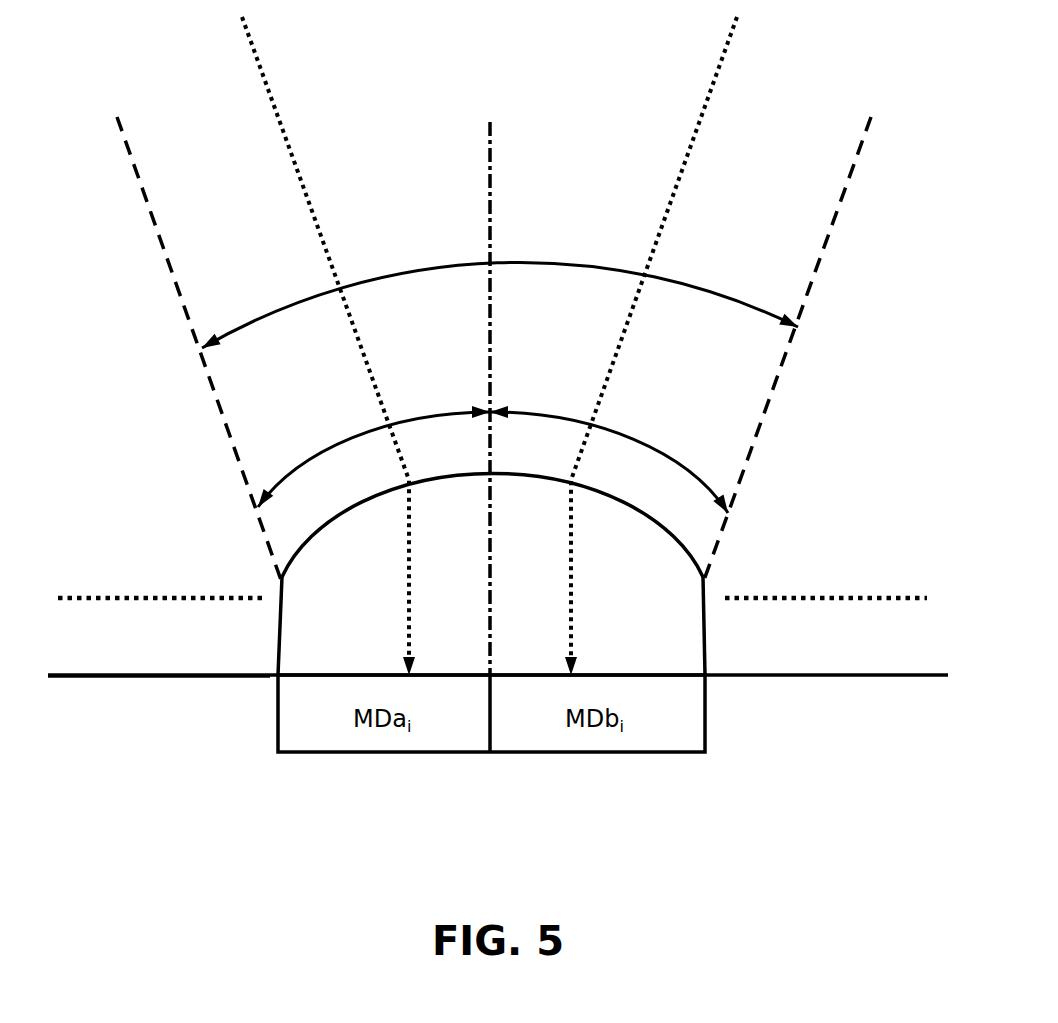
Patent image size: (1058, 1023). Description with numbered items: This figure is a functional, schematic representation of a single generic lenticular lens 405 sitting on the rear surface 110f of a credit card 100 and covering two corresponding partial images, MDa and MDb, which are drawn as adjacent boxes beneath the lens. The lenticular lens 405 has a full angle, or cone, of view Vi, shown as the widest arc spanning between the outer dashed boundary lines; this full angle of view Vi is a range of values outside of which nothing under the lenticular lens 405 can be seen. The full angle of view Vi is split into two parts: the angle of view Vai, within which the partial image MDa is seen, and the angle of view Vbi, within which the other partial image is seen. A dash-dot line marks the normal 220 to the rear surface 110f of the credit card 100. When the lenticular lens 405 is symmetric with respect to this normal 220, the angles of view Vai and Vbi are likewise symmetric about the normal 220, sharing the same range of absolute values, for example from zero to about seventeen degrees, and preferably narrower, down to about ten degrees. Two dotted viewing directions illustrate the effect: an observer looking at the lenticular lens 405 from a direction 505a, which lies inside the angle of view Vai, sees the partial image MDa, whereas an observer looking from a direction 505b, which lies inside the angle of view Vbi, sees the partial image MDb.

The credit card 100 is at (136, 738).
The rear surface 110f is at (498, 710).
The normal 220 is at (443, 398).
The lenticular lens 405 is at (534, 574).
The viewing direction inside angle of view Va_i 505a is at (328, 346).
The viewing direction inside angle of view Vb_i 505b is at (651, 346).
The full angle of view Vi is at (494, 348).
The angle of view Va_i Vai is at (374, 445).
The angle of view Vb_i Vbi is at (611, 454).